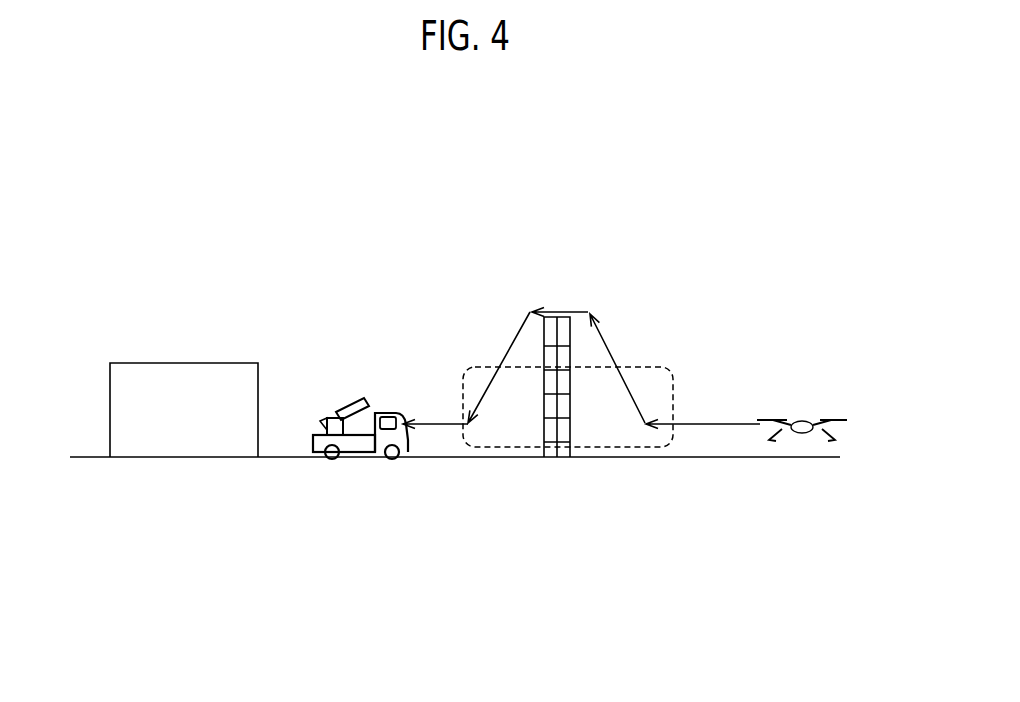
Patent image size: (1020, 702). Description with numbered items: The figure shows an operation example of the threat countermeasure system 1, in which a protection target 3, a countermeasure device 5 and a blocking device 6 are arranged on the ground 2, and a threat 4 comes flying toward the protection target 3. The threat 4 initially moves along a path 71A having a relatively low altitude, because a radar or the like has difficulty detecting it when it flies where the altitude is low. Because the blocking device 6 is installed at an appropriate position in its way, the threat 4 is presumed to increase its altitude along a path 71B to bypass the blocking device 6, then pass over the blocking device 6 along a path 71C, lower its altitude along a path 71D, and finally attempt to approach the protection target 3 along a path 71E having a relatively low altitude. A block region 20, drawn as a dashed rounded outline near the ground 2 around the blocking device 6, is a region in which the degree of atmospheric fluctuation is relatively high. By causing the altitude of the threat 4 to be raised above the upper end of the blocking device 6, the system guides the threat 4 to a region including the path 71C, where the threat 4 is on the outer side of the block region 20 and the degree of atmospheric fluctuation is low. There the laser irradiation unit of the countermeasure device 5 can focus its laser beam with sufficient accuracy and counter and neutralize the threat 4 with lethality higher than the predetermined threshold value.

The threat countermeasure system 1 is at (712, 122).
The ground 2 is at (470, 458).
The protection target 3 is at (182, 450).
The threat 4 is at (803, 419).
The countermeasure device 5 is at (367, 452).
The blocking device 6 is at (549, 458).
The block region 20 is at (657, 437).
The path 71A is at (728, 420).
The path 71B is at (606, 342).
The path 71C is at (557, 311).
The path 71D is at (512, 339).
The path 71E is at (433, 422).